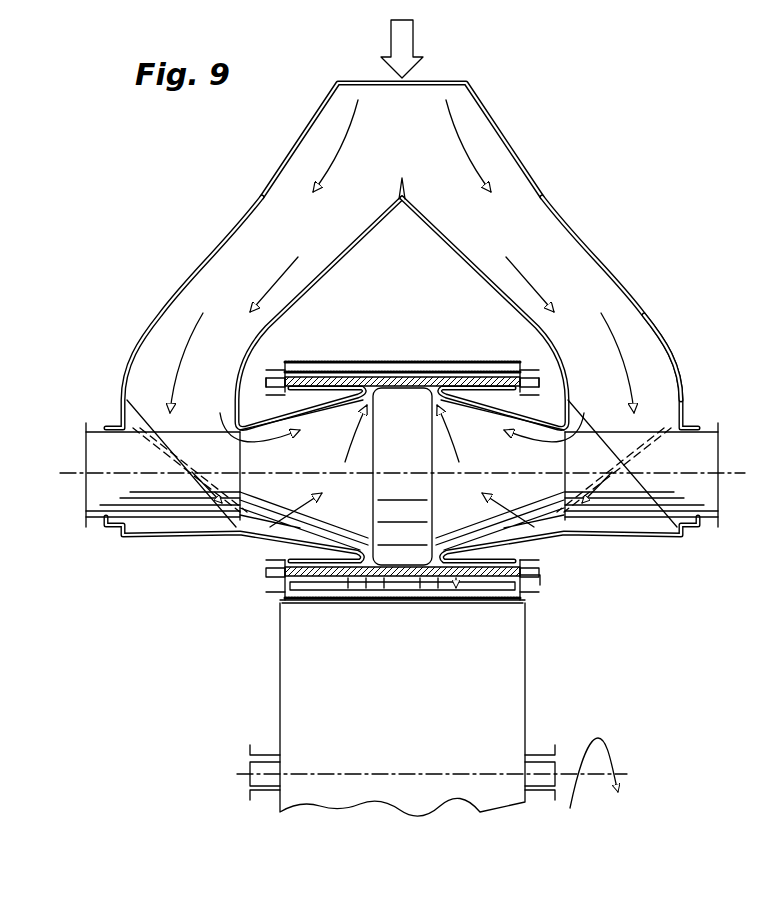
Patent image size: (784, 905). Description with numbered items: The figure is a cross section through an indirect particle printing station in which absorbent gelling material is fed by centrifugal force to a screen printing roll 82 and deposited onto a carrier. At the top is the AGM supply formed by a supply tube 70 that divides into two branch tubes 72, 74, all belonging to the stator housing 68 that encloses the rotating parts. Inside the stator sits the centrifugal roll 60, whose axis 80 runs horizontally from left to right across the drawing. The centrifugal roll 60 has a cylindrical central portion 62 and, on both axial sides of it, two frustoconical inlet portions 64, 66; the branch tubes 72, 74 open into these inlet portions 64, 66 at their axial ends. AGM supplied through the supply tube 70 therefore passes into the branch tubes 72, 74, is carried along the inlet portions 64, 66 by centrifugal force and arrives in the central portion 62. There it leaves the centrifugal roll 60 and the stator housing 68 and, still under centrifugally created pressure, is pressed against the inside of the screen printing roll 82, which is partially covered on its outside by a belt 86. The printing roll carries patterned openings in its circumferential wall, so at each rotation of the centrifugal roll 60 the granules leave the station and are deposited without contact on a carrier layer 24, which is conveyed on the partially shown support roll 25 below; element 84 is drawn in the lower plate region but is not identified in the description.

The carrier layer 24 is at (282, 596).
The support roll 25 is at (300, 692).
The centrifugal roll 60 is at (195, 530).
The central portion 62 is at (415, 463).
The frustoconical inlet portion 64 is at (331, 463).
The frustoconical inlet portion 66 is at (499, 463).
The stator housing 68 is at (569, 212).
The supply tube 70 is at (440, 98).
The branch tube 72 is at (220, 243).
The branch tube 74 is at (612, 260).
The axis 80 is at (68, 480).
The screen printing roll 82 is at (540, 578).
The lower plate 84 is at (318, 580).
The belt 86 is at (388, 364).